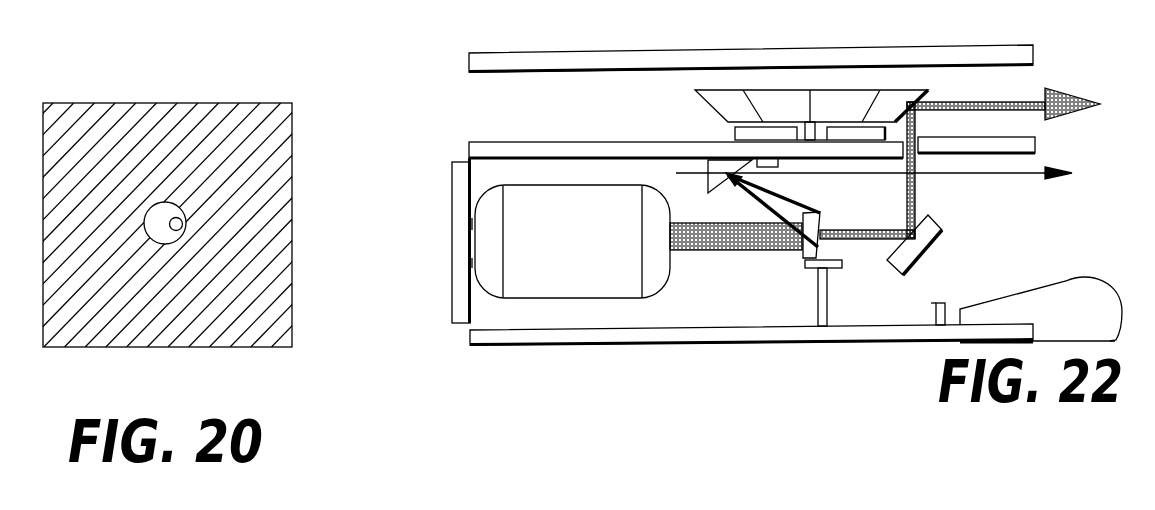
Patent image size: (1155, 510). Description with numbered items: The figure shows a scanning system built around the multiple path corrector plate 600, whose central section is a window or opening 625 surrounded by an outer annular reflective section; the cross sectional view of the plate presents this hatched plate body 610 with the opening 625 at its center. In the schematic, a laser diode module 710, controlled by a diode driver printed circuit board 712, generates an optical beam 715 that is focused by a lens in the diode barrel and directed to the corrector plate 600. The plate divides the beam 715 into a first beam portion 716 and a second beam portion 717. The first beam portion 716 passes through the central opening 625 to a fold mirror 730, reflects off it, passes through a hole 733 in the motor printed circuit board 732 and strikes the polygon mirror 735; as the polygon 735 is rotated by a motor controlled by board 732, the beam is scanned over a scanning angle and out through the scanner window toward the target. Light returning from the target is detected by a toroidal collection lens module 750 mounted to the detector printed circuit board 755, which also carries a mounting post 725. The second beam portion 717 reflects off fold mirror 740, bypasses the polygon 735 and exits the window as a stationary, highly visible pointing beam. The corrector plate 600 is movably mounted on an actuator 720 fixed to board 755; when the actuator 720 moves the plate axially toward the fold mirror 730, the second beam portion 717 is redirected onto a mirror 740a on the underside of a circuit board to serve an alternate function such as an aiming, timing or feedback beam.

In FIG. 20, the mirror substrate 610 is at (260, 145).
In FIG. 20, the central opening 625 is at (174, 230).
In FIG. 22, the corrector plate 600 is at (803, 256).
In FIG. 22, the laser diode module 710 is at (605, 248).
In FIG. 22, the diode driver printed circuit board 712 is at (470, 274).
In FIG. 22, the optical beam 715 is at (740, 255).
In FIG. 22, the first beam portion 716 is at (870, 240).
In FIG. 22, the second beam portion 717 is at (782, 196).
In FIG. 22, the actuator 720 is at (812, 268).
In FIG. 22, the post 725 is at (828, 297).
In FIG. 22, the fold mirror 730 is at (914, 250).
In FIG. 22, the motor printed circuit board 732 is at (577, 147).
In FIG. 22, the hole 733 is at (913, 160).
In FIG. 22, the polygon mirror 735 is at (823, 98).
In FIG. 22, the fold mirror 740 is at (708, 168).
In FIG. 22, the mirror 740a is at (757, 158).
In FIG. 22, the toroidal collection lens module 750 is at (1063, 290).
In FIG. 22, the detector printed circuit board 755 is at (663, 335).